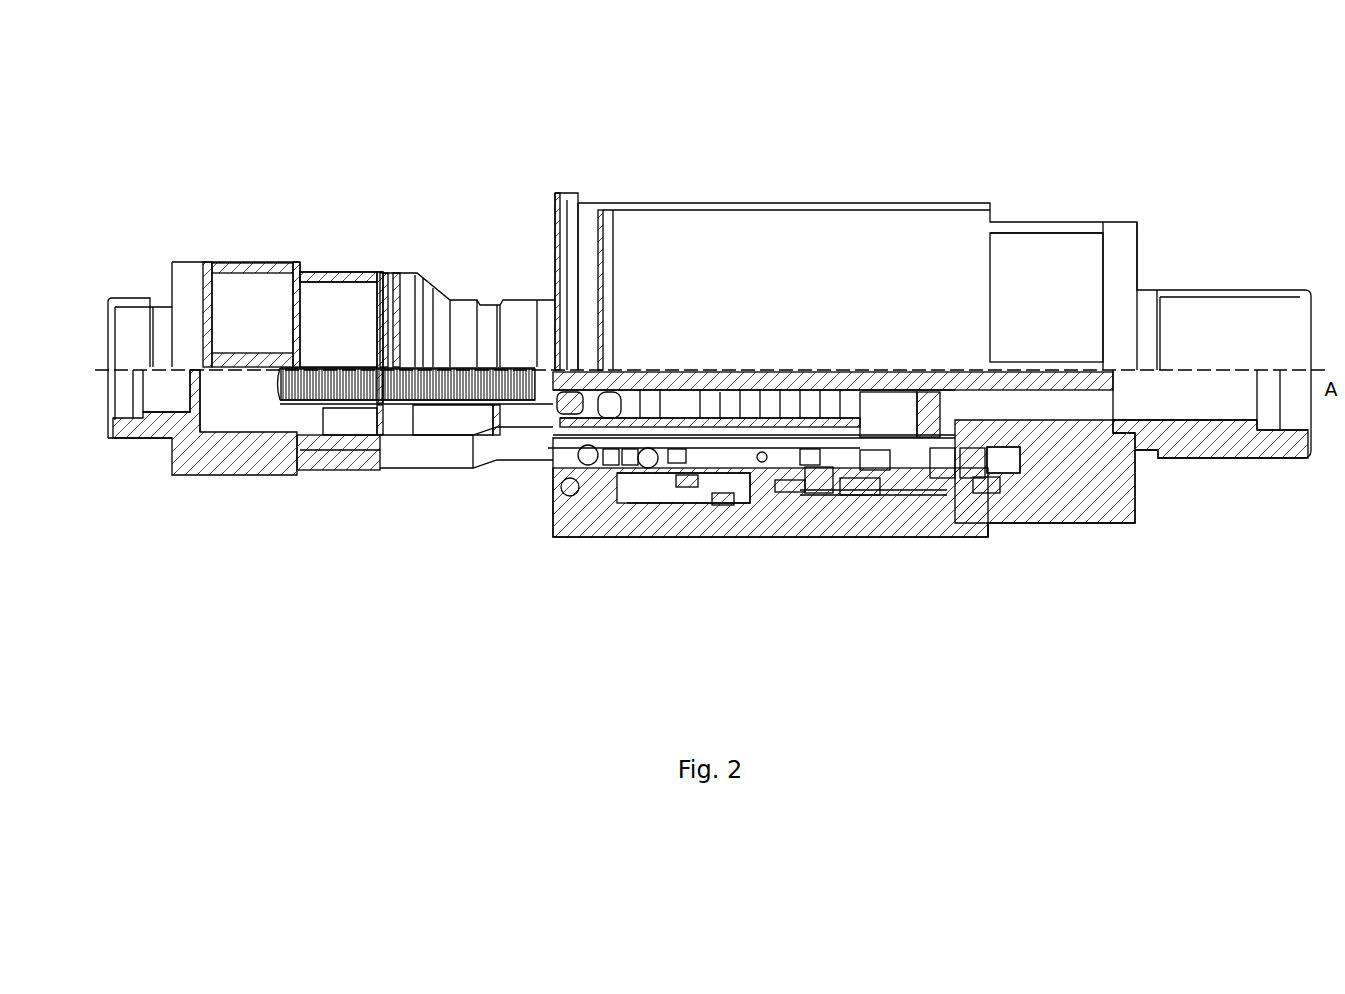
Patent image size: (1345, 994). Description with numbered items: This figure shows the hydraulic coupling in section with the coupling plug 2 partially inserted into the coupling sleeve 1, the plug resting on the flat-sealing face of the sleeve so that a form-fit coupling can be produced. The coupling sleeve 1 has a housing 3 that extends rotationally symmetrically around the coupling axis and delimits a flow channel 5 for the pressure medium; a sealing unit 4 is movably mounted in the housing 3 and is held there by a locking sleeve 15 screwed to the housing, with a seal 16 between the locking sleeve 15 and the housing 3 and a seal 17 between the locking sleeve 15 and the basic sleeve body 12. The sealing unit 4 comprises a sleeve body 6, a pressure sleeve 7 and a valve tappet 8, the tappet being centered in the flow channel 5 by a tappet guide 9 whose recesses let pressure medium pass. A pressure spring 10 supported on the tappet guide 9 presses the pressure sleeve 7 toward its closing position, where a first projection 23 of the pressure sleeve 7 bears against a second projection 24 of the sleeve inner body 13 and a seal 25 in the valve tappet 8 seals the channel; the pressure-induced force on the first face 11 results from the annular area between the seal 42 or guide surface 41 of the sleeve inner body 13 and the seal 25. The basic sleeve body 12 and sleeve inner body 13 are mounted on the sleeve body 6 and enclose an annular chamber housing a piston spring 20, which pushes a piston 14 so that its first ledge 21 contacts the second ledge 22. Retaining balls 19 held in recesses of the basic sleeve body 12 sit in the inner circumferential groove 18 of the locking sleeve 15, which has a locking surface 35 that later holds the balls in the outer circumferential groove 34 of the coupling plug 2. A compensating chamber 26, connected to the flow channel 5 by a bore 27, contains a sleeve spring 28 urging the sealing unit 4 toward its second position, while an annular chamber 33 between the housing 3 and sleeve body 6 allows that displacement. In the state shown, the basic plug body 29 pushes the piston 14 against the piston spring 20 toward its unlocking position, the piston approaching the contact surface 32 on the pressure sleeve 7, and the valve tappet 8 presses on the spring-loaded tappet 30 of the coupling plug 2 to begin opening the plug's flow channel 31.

The coupling sleeve 1 is at (1070, 174).
The coupling plug 2 is at (202, 228).
The housing 3 is at (1187, 447).
The sealing unit 4 is at (846, 496).
The flow channel 5 is at (1142, 403).
The sleeve body 6 is at (975, 467).
The pressure sleeve 7 is at (640, 385).
The valve tappet 8 is at (785, 392).
The tappet guide 9 is at (873, 392).
The pressure spring 10 is at (825, 392).
The first face 11 is at (740, 395).
The basic sleeve body 12 is at (770, 460).
The sleeve inner body 13 is at (858, 470).
The piston 14 is at (568, 385).
The locking sleeve 15 is at (575, 478).
The seal 16 is at (725, 507).
The seal 17 is at (687, 490).
The inner circumferential groove 18 is at (565, 470).
The retaining balls 19 is at (560, 445).
The piston spring 20 is at (800, 440).
The first ledge 21 is at (668, 455).
The second ledge 22 is at (622, 455).
The first projection 23 is at (696, 395).
The second projection 24 is at (650, 400).
The seal 25 is at (565, 395).
The compensating chamber 26 is at (823, 490).
The bore 27 is at (947, 467).
The sleeve spring 28 is at (760, 473).
The basic plug body 29 is at (408, 448).
The tappet 30 is at (498, 368).
The flow channel 31 is at (390, 430).
The contact surface 32 is at (612, 385).
The annular chamber 33 is at (1028, 472).
The outer circumferential groove 34 is at (505, 430).
The locking surface 35 is at (615, 430).
The guide surface 41 is at (797, 392).
The seal 42 is at (712, 392).